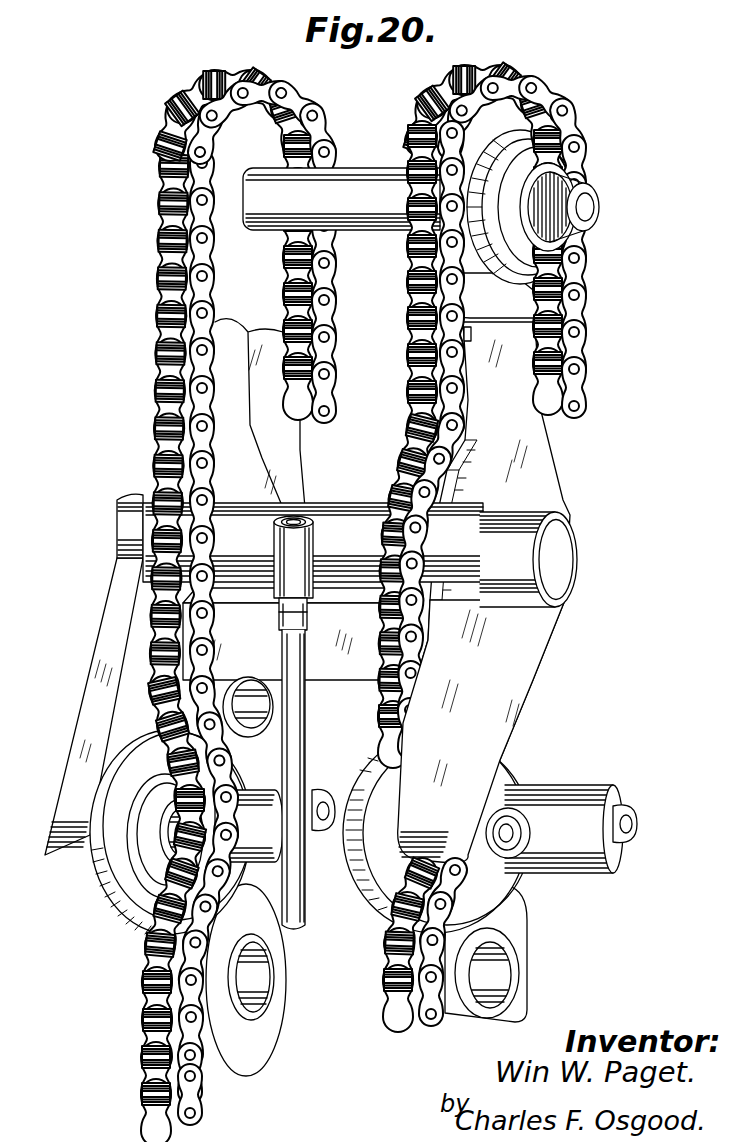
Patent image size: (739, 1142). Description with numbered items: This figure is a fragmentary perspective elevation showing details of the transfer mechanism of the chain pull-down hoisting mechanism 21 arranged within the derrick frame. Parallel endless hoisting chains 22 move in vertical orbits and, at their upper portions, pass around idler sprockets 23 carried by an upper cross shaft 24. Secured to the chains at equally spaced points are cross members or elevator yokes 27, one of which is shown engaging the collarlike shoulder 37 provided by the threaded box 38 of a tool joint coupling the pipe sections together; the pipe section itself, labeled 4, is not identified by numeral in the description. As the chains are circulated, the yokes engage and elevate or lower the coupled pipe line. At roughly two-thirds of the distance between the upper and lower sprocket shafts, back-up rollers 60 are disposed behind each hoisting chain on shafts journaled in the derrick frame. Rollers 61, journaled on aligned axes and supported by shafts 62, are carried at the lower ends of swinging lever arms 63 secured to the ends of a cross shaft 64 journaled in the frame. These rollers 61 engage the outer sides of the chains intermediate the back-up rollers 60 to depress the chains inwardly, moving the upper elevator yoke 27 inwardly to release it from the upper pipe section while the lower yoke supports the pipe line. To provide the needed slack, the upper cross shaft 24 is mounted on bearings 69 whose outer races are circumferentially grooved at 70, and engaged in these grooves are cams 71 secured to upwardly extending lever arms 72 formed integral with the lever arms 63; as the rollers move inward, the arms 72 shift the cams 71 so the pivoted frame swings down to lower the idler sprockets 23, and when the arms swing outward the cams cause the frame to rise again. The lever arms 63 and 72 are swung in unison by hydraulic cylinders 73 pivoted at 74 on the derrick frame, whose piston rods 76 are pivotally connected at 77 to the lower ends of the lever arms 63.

The rod 4 is at (303, 897).
The hoisting mechanism 21 is at (400, 386).
The endless chains 22 is at (160, 390).
The idler sprockets 23 is at (285, 140).
The cross shaft 24 is at (352, 180).
The elevator yokes 27 is at (357, 667).
The shoulders 37 is at (310, 620).
The threaded boxes 38 is at (313, 550).
The back-up rollers 60 is at (197, 697).
The rollers 61 is at (107, 880).
The shafts 62 is at (177, 857).
The swinging lever arms 63 is at (90, 735).
The cross shaft 64 is at (326, 510).
The bearings 69 is at (557, 263).
The circumferential grooves 70 is at (550, 140).
The cams 71 is at (465, 284).
The lever arms 72 is at (253, 452).
The hydraulic cylinders 73 is at (613, 777).
The pivots 74 is at (333, 800).
The piston rods 76 is at (493, 845).
The pivotal connections 77 is at (505, 860).